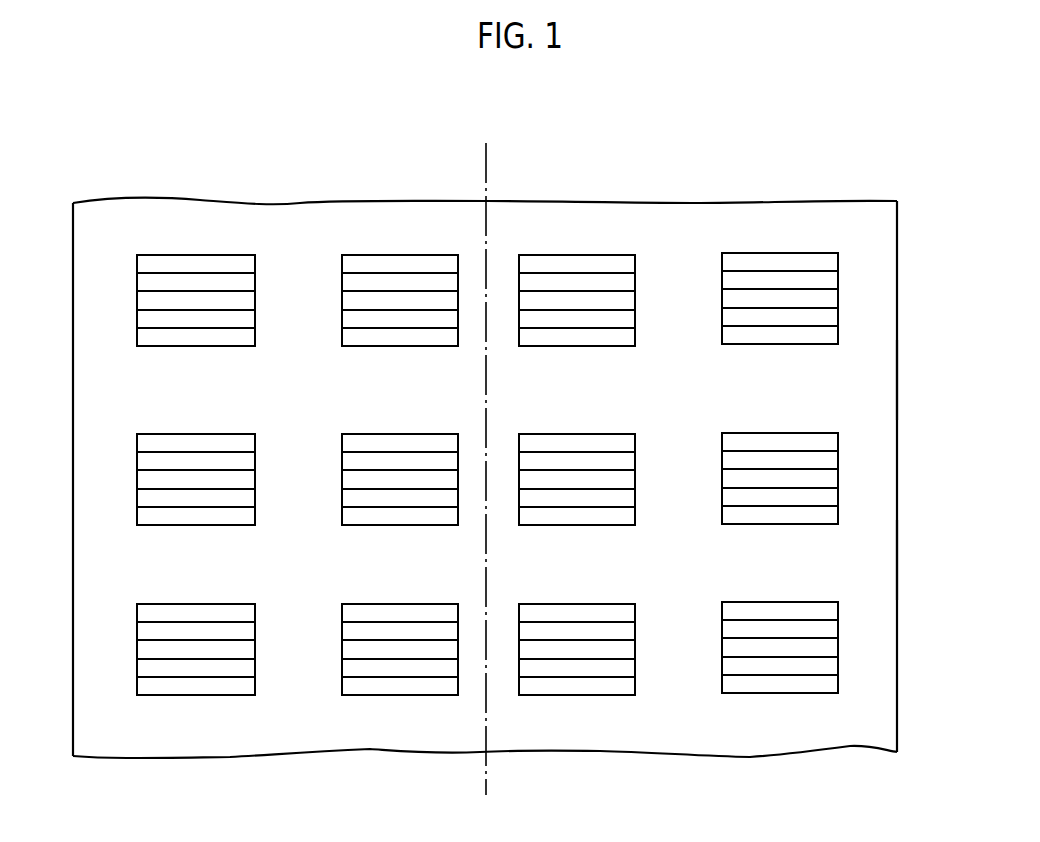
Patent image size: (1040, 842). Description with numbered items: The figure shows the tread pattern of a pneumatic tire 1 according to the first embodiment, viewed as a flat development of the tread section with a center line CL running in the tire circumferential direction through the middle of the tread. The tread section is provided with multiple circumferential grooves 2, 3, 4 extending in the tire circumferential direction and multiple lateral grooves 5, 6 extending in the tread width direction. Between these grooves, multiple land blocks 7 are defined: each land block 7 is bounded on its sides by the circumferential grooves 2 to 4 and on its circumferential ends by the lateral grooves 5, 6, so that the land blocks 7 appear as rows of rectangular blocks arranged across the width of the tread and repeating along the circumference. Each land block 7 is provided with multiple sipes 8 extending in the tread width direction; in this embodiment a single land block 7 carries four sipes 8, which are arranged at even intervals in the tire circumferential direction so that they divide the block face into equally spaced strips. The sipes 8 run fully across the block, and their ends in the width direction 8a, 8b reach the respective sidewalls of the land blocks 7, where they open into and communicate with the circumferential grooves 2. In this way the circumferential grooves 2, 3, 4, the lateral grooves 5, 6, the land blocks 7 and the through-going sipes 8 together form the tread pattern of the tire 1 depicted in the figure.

The pneumatic tire 1 is at (143, 133).
The center line CL is at (483, 157).
The circumferential groove 2 is at (300, 255).
The circumferential groove 3 is at (500, 270).
The circumferential groove 4 is at (670, 260).
The lateral groove 5 is at (820, 383).
The lateral groove 6 is at (822, 562).
The land block 7 is at (379, 296).
The sipe 8 is at (391, 329).
The end in the width direction of the sipe 8a is at (342, 328).
The end in the width direction of the sipe 8b is at (458, 328).